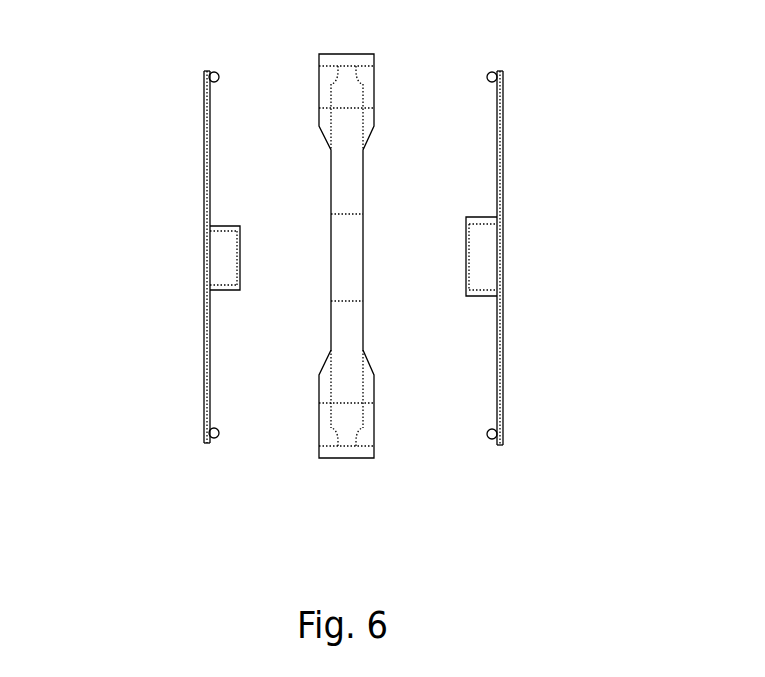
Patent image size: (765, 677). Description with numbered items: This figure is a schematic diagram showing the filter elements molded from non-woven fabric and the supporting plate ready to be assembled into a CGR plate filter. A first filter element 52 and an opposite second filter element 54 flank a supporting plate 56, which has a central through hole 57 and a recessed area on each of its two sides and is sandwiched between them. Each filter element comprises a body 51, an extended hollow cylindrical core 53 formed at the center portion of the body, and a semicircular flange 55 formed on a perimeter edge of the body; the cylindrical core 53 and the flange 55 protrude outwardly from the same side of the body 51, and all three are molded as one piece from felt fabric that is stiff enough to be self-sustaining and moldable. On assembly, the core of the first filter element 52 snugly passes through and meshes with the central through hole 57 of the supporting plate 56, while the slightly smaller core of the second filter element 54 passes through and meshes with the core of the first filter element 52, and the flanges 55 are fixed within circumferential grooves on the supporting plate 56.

The body 51 is at (205, 126).
The first filter element 52 is at (190, 432).
The extended hollow cylindrical core 53 is at (223, 255).
The second filter element 54 is at (538, 422).
The flange 55 is at (212, 78).
The supporting plate 56 is at (385, 468).
The central through hole 57 is at (347, 257).